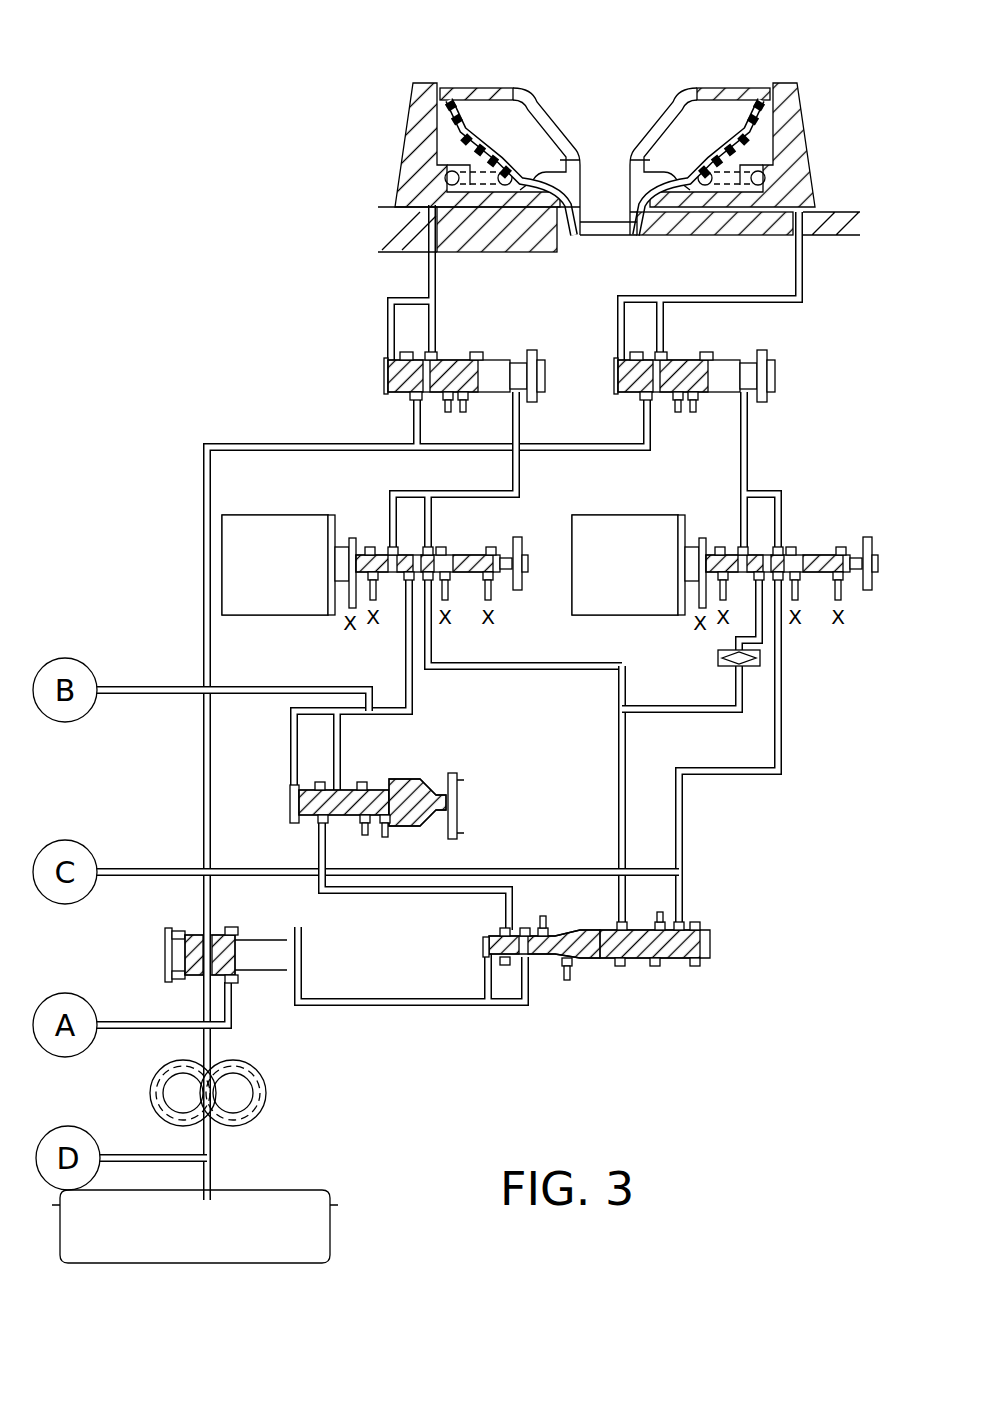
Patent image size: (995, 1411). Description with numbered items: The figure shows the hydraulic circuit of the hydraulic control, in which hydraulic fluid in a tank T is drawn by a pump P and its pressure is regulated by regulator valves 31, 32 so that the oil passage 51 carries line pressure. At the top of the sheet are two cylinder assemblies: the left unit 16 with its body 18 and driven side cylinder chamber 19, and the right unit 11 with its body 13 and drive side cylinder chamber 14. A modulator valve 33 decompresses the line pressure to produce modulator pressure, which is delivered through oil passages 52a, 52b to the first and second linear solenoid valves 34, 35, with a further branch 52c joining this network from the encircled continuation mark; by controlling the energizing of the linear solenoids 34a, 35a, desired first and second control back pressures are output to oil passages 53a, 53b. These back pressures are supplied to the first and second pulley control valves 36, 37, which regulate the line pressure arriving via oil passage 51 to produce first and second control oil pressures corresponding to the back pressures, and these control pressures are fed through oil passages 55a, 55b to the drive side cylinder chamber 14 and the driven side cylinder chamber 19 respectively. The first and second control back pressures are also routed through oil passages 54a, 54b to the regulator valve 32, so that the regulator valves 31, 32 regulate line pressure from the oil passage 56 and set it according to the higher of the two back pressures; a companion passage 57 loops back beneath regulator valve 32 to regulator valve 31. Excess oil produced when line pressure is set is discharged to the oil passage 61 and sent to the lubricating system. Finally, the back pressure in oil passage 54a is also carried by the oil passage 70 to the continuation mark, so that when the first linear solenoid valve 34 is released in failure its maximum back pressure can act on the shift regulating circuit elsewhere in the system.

The wheel cylinder (right) 11 is at (750, 121).
The cylinder body 13 is at (790, 135).
The drive side cylinder chamber 14 is at (760, 153).
The wheel cylinder (left) 16 is at (470, 131).
The cylinder body 18 is at (405, 150).
The driven side cylinder chamber 19 is at (456, 135).
The regulator valve 31 is at (222, 1000).
The regulator valve 32 is at (651, 990).
The modulator valve 33 is at (412, 777).
The first linear solenoid valve 34 is at (734, 548).
The linear solenoid 34a is at (652, 520).
The second linear solenoid valve 35 is at (393, 550).
The linear solenoid 35a is at (298, 520).
The first pulley control valve 36 is at (792, 358).
The second pulley control valve 37 is at (502, 335).
The oil passage 51 is at (365, 441).
The oil passage 52a is at (637, 716).
The oil passage 52b is at (432, 680).
The pipe 52c is at (282, 686).
The oil passage 53a is at (750, 430).
The oil passage 53b is at (522, 468).
The oil passage 54a is at (706, 780).
The oil passage 54b is at (618, 792).
The oil passage 55a is at (796, 288).
The oil passage 55b is at (440, 268).
The oil passage 56 is at (345, 905).
The pipe 57 is at (348, 1008).
The oil passage 61 is at (160, 976).
The oil passage 70 is at (502, 867).
The pump P is at (266, 1088).
The tank T is at (281, 1194).